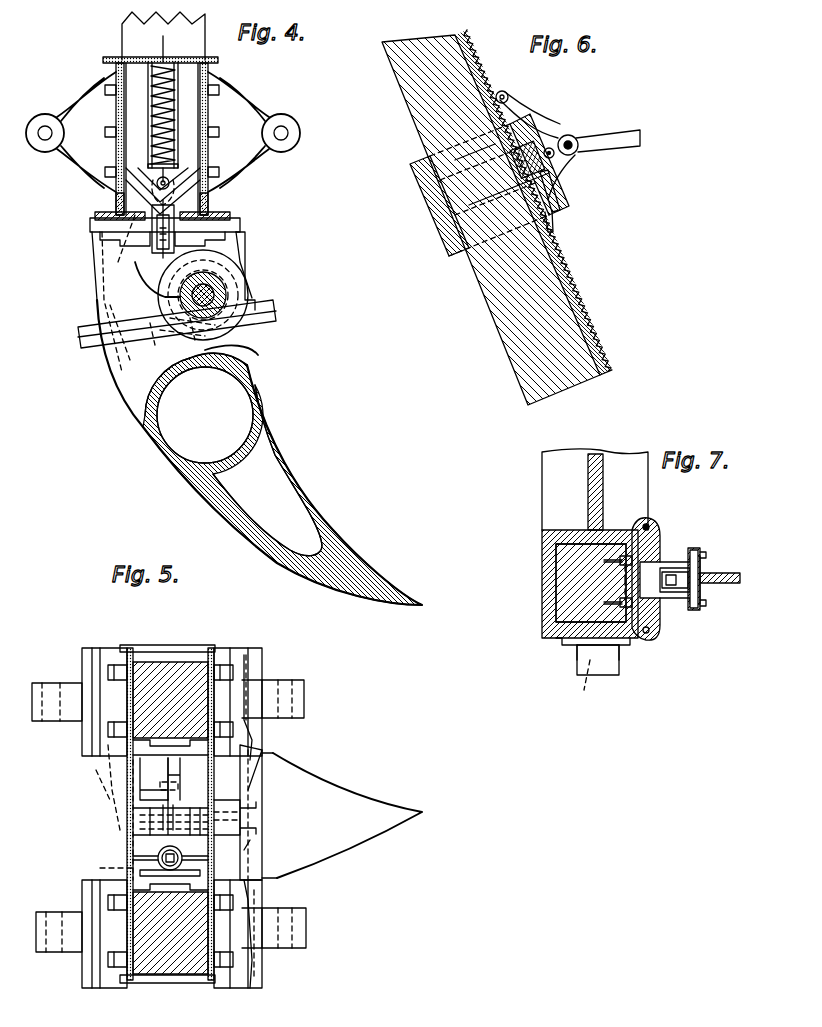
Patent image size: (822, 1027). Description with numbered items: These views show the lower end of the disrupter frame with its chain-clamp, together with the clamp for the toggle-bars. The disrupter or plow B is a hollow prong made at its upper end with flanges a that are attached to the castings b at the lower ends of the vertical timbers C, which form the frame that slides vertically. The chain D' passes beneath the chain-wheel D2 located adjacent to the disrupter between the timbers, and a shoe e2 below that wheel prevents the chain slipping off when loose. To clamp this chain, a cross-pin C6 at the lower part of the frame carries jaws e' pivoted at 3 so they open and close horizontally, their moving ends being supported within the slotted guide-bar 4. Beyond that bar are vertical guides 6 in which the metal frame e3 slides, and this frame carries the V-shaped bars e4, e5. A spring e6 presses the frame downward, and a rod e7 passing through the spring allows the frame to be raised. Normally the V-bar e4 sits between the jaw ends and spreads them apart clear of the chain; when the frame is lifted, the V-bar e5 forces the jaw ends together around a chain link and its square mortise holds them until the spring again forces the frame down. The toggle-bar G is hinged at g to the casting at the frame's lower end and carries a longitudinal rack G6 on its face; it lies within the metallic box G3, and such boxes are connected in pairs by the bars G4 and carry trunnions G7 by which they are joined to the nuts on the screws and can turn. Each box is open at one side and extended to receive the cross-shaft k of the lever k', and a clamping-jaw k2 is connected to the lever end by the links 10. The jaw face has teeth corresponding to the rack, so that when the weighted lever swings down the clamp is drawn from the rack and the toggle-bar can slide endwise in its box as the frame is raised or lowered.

In FIG. 4, the vertical timbers C is at (163, 90).
In FIG. 5, the vertical timbers C is at (185, 658).
In FIG. 4, the rod e7 is at (161, 44).
In FIG. 5, the rod e7 is at (180, 856).
In FIG. 4, the spring e6 is at (176, 86).
In FIG. 4, the metal frame e3 is at (236, 148).
In FIG. 5, the metal frame e3 is at (105, 820).
In FIG. 4, the hinge g is at (42, 138).
In FIG. 5, the hinge g is at (48, 920).
In FIG. 4, the V-shaped bar e4 is at (135, 183).
In FIG. 5, the V-shaped bar e4 is at (168, 864).
In FIG. 4, the V-shaped bar e5 is at (114, 207).
In FIG. 4, the jaws e' is at (177, 229).
In FIG. 5, the jaws e' is at (156, 791).
In FIG. 4, the slotted guide-bar 4 is at (105, 240).
In FIG. 4, the vertical guides 6 is at (125, 244).
In FIG. 5, the vertical guides 6 is at (133, 848).
In FIG. 4, the castings b is at (96, 274).
In FIG. 5, the castings b is at (250, 660).
In FIG. 4, the chain-wheel D2 is at (250, 280).
In FIG. 5, the chain-wheel D2 is at (262, 795).
In FIG. 4, the flanges a is at (82, 348).
In FIG. 5, the flanges a is at (270, 666).
In FIG. 4, the shoe e2 is at (185, 350).
In FIG. 5, the shoe e2 is at (288, 818).
In FIG. 4, the disrupter B is at (259, 452).
In FIG. 5, the disrupter B is at (342, 815).
In FIG. 6, the toggle-bar G is at (505, 335).
In FIG. 7, the toggle-bar G is at (556, 640).
In FIG. 6, the rack G6 is at (568, 300).
In FIG. 7, the rack G6 is at (598, 674).
In FIG. 6, the metallic box G3 is at (425, 192).
In FIG. 7, the metallic box G3 is at (578, 584).
In FIG. 6, the cross-shaft k is at (547, 145).
In FIG. 7, the cross-shaft k is at (702, 560).
In FIG. 6, the lever k' is at (608, 128).
In FIG. 7, the lever k' is at (723, 561).
In FIG. 6, the links 10 is at (545, 148).
In FIG. 7, the links 10 is at (665, 560).
In FIG. 6, the clamping-jaw k2 is at (555, 172).
In FIG. 7, the clamping-jaw k2 is at (640, 640).
In FIG. 7, the bars G4 is at (595, 489).
In FIG. 7, the trunnions G7 is at (612, 668).
In FIG. 5, the chain D' is at (95, 787).
In FIG. 5, the cross-pin C6 is at (148, 795).
In FIG. 5, the pivot 3 is at (170, 785).